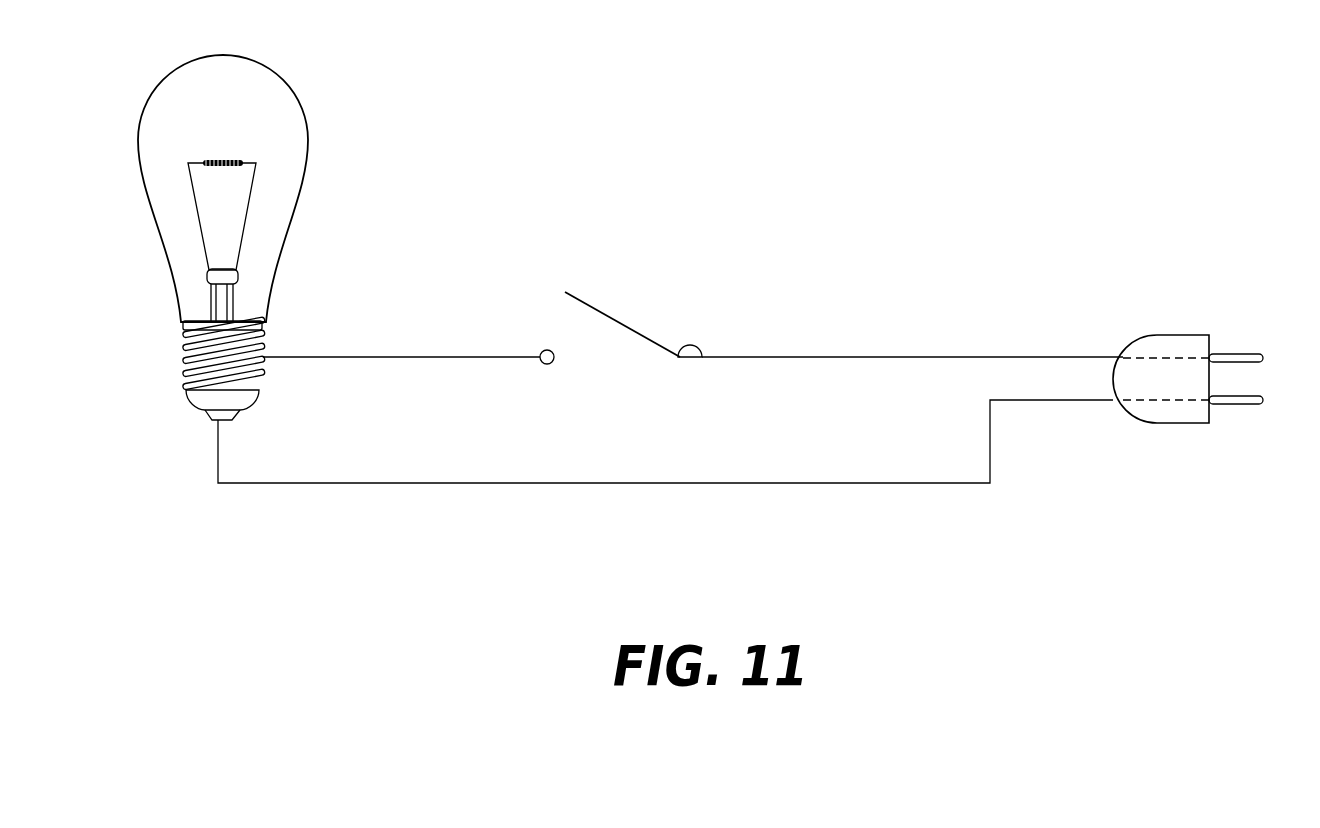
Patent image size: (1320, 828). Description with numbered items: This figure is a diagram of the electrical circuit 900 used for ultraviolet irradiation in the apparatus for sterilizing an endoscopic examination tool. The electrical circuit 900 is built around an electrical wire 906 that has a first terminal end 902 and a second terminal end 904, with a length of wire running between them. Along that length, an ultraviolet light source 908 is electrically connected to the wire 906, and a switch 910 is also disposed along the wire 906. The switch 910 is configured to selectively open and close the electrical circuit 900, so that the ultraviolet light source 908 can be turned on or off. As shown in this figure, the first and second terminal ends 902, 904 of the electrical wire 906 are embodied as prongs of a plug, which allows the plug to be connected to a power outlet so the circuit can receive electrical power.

The electrical circuit 900 is at (797, 199).
The first terminal end 902 is at (1236, 405).
The second terminal end 904 is at (1243, 353).
The electrical wire 906 is at (866, 486).
The ultraviolet light source 908 is at (305, 171).
The switch 910 is at (612, 318).